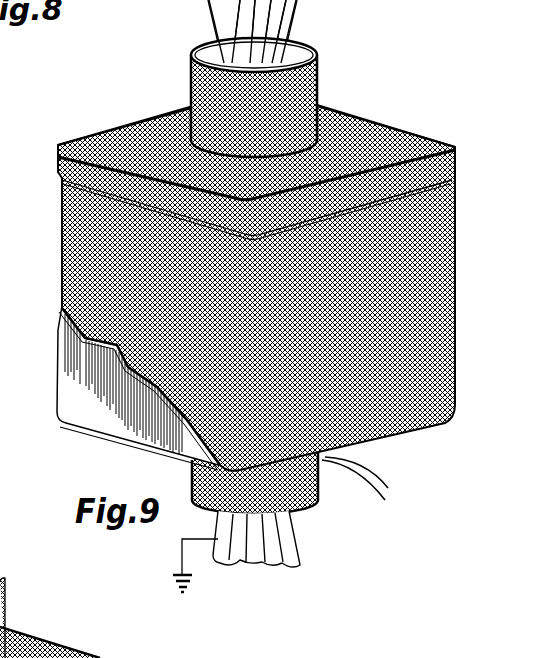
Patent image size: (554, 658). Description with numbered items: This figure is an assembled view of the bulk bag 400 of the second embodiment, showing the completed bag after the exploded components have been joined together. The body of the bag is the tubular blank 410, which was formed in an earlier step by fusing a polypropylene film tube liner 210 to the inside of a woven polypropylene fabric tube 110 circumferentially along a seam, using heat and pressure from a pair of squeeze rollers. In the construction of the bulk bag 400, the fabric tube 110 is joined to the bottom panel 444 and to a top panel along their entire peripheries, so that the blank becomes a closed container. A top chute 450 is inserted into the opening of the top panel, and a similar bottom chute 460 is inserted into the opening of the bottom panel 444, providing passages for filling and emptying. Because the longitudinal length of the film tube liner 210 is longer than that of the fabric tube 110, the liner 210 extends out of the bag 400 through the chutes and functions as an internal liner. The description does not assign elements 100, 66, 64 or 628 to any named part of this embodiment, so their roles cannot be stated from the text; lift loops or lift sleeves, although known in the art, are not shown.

The film tube liner 210 is at (285, 22).
The bulk bag 400 is at (73, 133).
The bottom panel 444 is at (380, 133).
The top chute 450 is at (304, 88).
The bottom chute 460 is at (317, 488).
The woven polypropylene fabric tube 110 is at (82, 262).
The tubular blank 410 is at (60, 284).
The cable assembly 100 is at (0, 215).
The conductor 66 is at (12, 78).
The conductor 64 is at (12, 359).
The braided sleeve 628 is at (10, 610).